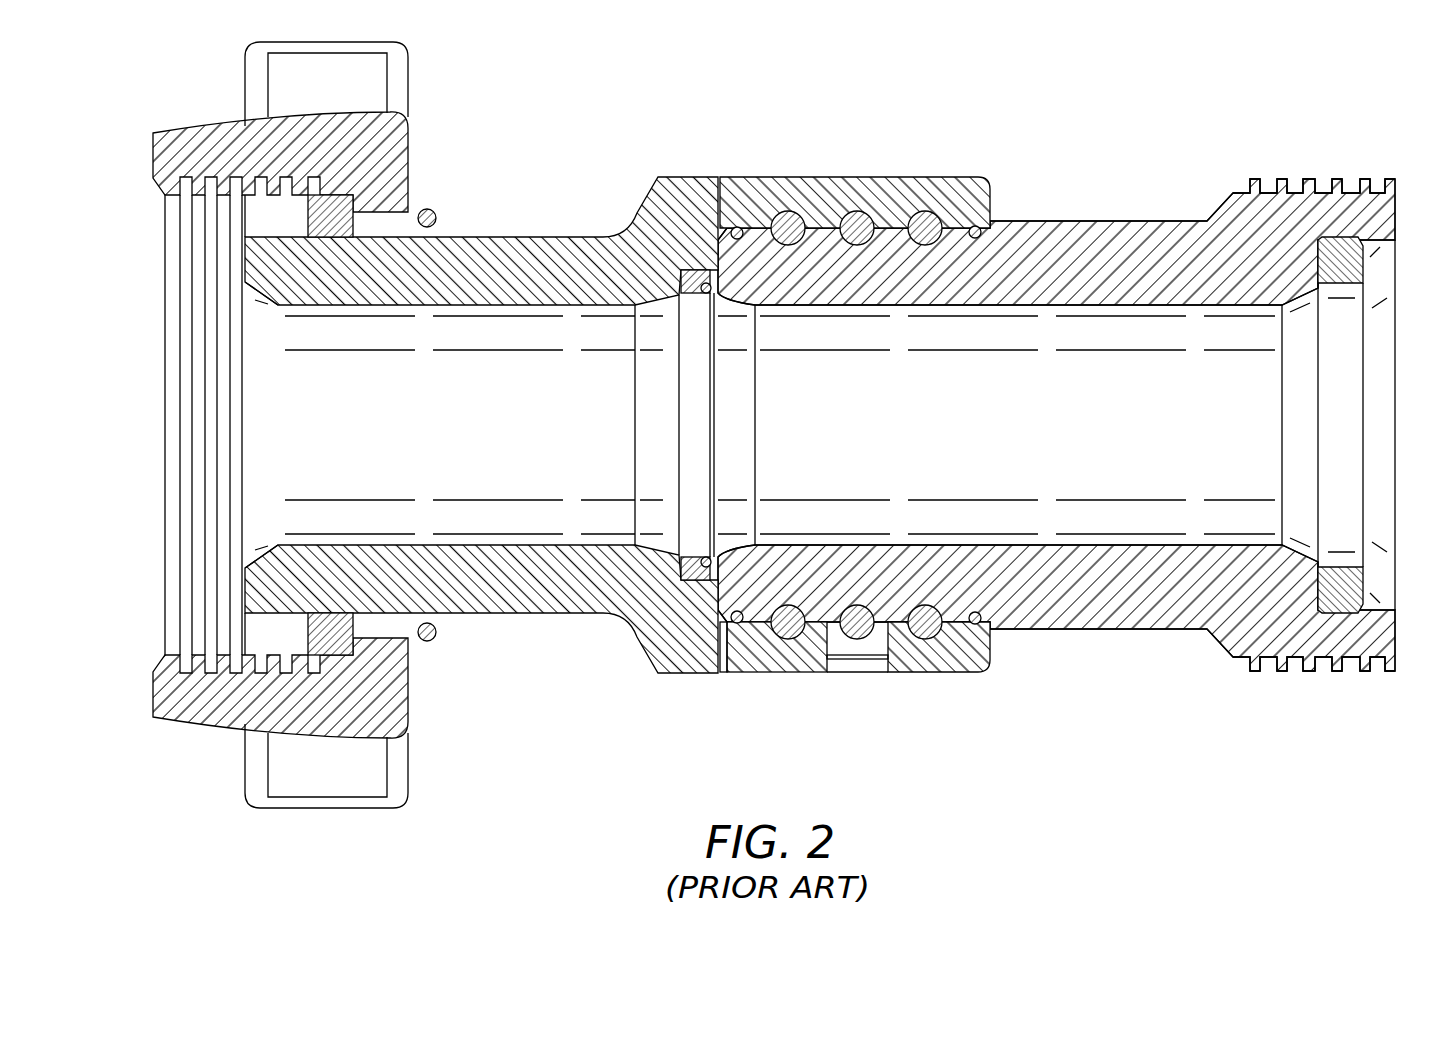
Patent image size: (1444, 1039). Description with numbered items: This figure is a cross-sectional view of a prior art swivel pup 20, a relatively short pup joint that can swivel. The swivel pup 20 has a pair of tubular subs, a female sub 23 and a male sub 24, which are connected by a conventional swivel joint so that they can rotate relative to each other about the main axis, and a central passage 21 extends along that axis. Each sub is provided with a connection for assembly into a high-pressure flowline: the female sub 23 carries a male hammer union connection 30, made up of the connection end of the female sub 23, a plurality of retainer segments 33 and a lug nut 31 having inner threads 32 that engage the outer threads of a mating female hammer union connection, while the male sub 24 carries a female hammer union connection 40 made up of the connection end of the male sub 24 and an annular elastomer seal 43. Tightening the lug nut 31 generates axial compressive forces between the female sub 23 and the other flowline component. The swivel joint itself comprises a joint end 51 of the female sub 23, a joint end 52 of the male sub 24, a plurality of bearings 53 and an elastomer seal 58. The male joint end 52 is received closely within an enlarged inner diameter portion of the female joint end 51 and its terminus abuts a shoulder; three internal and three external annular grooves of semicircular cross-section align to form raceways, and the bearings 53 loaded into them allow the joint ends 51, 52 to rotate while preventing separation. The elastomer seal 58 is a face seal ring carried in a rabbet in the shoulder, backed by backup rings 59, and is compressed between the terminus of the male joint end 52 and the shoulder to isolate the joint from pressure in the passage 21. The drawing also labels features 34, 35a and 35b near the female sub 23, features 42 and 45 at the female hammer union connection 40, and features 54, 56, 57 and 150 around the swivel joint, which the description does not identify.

The swivel pup 20 is at (764, 417).
The central passage 21 is at (442, 446).
The female sub 23 is at (553, 250).
The male sub 24 is at (1143, 232).
The male hammer union connection 30 is at (173, 724).
The lug nut 31 is at (402, 145).
The inner threads 32 is at (168, 424).
The retainer segments 33 is at (386, 218).
The O-ring 34 is at (437, 212).
The upper chamfer end of first body 35a is at (258, 545).
The lower chamfer end of first body 35b is at (243, 583).
The female hammer union connection 40 is at (1402, 265).
The external threads 42 is at (1280, 668).
The annular elastomer seal 43 is at (1335, 605).
The counterbore end 45 is at (1380, 588).
The female joint end 51 is at (928, 178).
The male joint end 52 is at (890, 290).
The bearings 53 is at (788, 211).
The retaining ring 54 is at (855, 663).
The O-ring seal 56 is at (736, 226).
The gap seal 57 is at (718, 645).
The elastomer seal 58 is at (690, 298).
The backup rings 59 is at (712, 290).
The retaining nut 150 is at (956, 680).